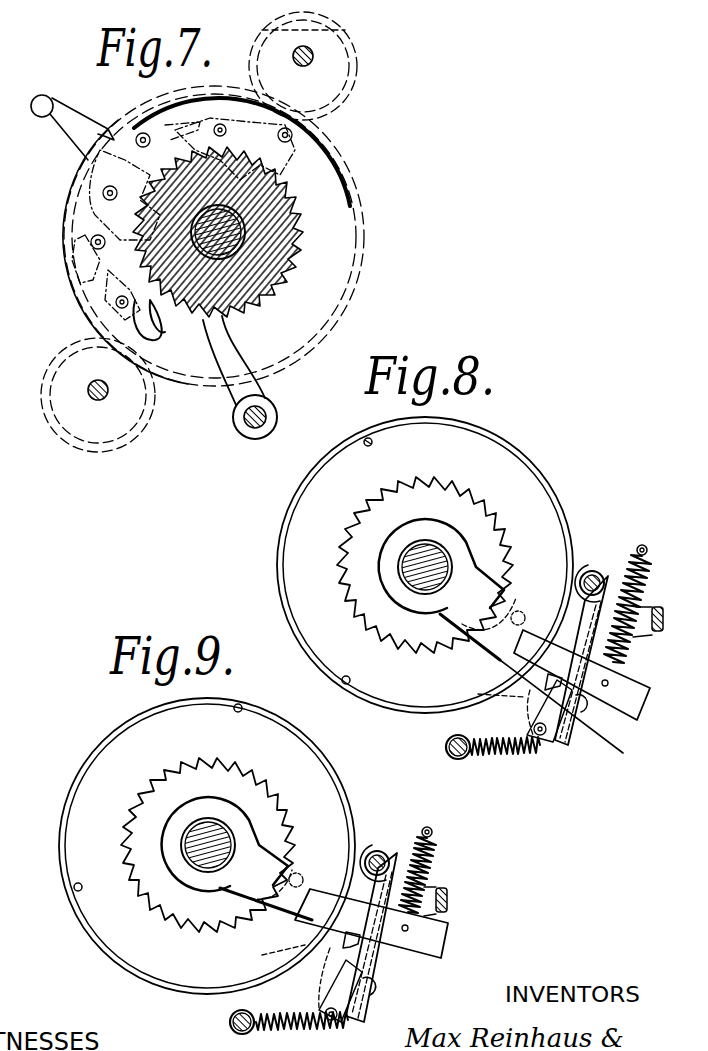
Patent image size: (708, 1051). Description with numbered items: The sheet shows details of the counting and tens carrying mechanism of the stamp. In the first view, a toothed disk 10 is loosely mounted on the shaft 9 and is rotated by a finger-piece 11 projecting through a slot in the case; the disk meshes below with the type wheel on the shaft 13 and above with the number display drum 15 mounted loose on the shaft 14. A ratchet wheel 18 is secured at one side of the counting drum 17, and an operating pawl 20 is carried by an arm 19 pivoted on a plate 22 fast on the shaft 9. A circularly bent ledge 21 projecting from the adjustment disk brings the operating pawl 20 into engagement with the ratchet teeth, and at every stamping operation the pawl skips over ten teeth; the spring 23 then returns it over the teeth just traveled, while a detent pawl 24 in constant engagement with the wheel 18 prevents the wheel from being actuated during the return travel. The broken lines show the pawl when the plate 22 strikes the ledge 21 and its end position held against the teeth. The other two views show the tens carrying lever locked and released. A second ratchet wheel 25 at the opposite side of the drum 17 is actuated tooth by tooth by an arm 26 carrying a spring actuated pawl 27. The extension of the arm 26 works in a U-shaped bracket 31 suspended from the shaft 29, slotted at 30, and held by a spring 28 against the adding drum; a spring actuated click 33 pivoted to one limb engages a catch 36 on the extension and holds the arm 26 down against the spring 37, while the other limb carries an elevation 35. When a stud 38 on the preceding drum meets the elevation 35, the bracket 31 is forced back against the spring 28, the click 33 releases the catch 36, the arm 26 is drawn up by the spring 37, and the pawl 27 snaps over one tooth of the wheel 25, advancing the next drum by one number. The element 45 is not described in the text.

In FIG. 7, the shaft 9 is at (265, 255).
In FIG. 8, the shaft 9 is at (414, 550).
In FIG. 9, the shaft 9 is at (207, 828).
In FIG. 7, the toothed disk 10 is at (356, 236).
In FIG. 7, the finger-piece 11 is at (68, 114).
In FIG. 7, the shaft 13 is at (100, 400).
In FIG. 7, the shaft 14 is at (310, 62).
In FIG. 7, the number display drum 15 is at (352, 60).
In FIG. 8, the drum 17 is at (358, 700).
In FIG. 9, the drum 17 is at (110, 960).
In FIG. 7, the ratchet wheel 18 is at (272, 300).
In FIG. 7, the arm 19 is at (95, 285).
In FIG. 7, the operating pawl 20 is at (108, 305).
In FIG. 7, the circularly bent ledge 21 is at (330, 140).
In FIG. 7, the plate 22 is at (90, 252).
In FIG. 7, the spring 23 is at (165, 338).
In FIG. 7, the detent pawl 24 is at (262, 372).
In FIG. 8, the second ratchet wheel 25 is at (355, 532).
In FIG. 9, the second ratchet wheel 25 is at (128, 834).
In FIG. 8, the arm 26 is at (455, 630).
In FIG. 9, the arm 26 is at (228, 905).
In FIG. 8, the spring actuated pawl 27 is at (478, 645).
In FIG. 9, the spring actuated pawl 27 is at (278, 905).
In FIG. 8, the spring 28 is at (506, 738).
In FIG. 9, the spring 28 is at (300, 1012).
In FIG. 8, the shaft 29 is at (596, 570).
In FIG. 9, the shaft 29 is at (380, 852).
In FIG. 8, the slot 30 is at (615, 665).
In FIG. 9, the slot 30 is at (374, 968).
In FIG. 8, the U-shaped bracket 31 is at (575, 713).
In FIG. 9, the U-shaped bracket 31 is at (372, 994).
In FIG. 8, the click 33 is at (562, 740).
In FIG. 9, the click 33 is at (358, 1015).
In FIG. 8, the elevation 35 is at (490, 693).
In FIG. 9, the elevation 35 is at (272, 955).
In FIG. 8, the catch 36 is at (545, 690).
In FIG. 9, the catch 36 is at (343, 946).
In FIG. 8, the spring 37 is at (655, 582).
In FIG. 9, the spring 37 is at (435, 846).
In FIG. 8, the stud 38 is at (372, 444).
In FIG. 9, the stud 38 is at (88, 896).
In FIG. 8, the stop 45 is at (652, 634).
In FIG. 9, the stop 45 is at (448, 888).